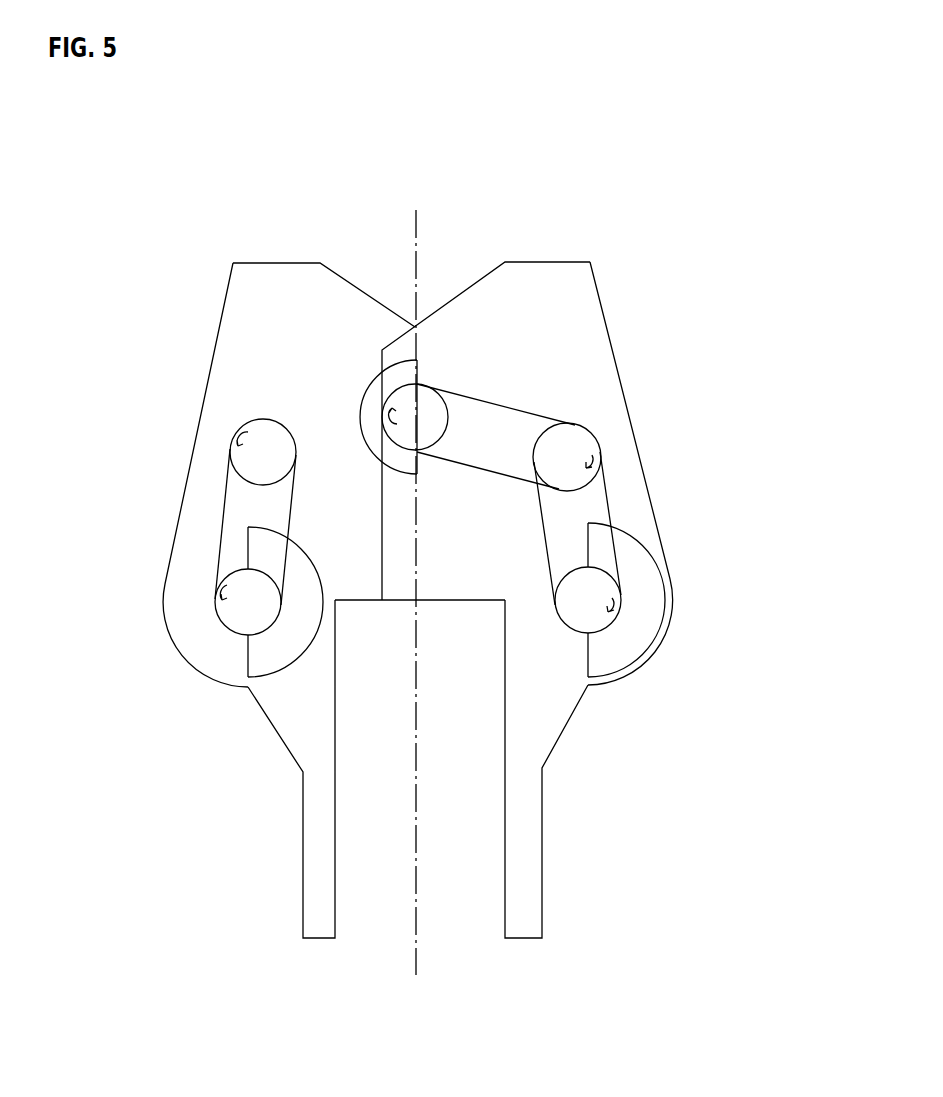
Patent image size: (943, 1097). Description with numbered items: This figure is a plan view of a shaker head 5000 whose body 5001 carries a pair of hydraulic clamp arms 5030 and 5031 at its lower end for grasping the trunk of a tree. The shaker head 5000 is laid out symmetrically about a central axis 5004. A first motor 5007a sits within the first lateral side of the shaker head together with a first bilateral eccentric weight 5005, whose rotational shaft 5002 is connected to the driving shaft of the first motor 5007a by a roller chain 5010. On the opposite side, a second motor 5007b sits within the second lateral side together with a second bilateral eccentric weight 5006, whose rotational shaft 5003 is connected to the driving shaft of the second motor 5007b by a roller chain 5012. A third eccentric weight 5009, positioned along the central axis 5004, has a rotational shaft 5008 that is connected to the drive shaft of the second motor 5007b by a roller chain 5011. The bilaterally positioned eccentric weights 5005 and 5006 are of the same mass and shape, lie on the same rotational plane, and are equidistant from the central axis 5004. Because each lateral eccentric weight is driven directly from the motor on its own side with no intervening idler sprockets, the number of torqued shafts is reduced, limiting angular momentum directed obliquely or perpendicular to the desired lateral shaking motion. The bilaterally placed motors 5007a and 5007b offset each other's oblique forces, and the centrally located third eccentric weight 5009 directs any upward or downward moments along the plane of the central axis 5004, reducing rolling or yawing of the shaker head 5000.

The shaker head 5000 is at (647, 277).
The housing 5001 is at (277, 287).
The central axis 5004 is at (418, 212).
The third eccentric weight 5009 is at (370, 403).
The central drive pulley 5008 is at (430, 401).
The roller chain 5011 is at (537, 412).
The first motor 5007a is at (250, 467).
The second motor 5007b is at (573, 460).
The roller chain 5010 is at (222, 519).
The roller chain 5012 is at (610, 510).
The rotational shaft 5002 is at (240, 628).
The rotational shaft 5003 is at (585, 633).
The first bilateral eccentric weight 5005 is at (270, 667).
The second bilateral eccentric weight 5006 is at (635, 625).
The hydraulic clamp arm 5030 is at (310, 880).
The hydraulic clamp arm 5031 is at (520, 888).